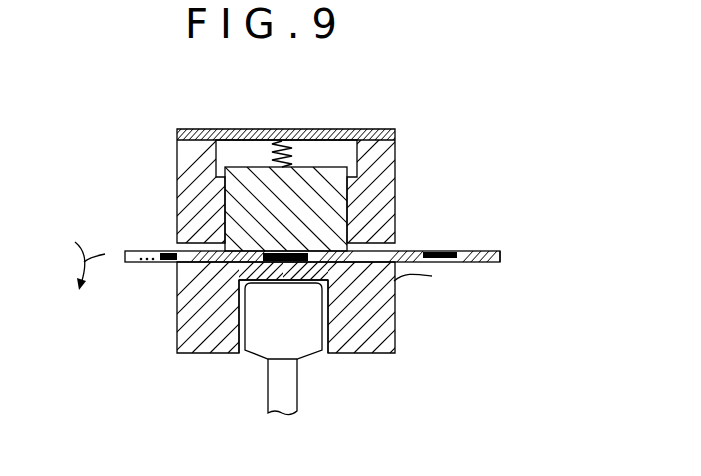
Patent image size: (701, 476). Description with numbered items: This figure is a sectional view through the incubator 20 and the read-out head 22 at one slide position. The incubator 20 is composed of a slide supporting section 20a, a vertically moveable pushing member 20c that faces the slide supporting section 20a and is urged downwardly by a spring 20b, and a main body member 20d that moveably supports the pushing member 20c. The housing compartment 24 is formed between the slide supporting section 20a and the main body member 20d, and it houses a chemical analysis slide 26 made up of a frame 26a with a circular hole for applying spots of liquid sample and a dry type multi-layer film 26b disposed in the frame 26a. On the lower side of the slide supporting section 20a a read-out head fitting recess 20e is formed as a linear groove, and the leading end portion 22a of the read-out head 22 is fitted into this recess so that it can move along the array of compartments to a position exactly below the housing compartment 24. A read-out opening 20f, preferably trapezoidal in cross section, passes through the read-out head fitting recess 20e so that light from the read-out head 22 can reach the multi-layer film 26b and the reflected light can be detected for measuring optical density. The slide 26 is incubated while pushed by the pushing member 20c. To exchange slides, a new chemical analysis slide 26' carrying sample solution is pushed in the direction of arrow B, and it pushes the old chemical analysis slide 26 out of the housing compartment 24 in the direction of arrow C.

The incubator 20 is at (416, 141).
The slide supporting section 20a is at (178, 290).
The spring 20b is at (300, 137).
The pushing member 20c is at (320, 187).
The main body member 20d is at (396, 182).
The read-out head fitting recess 20e is at (318, 355).
The read-out opening 20f is at (332, 277).
The read-out head 22 is at (304, 405).
The leading end portion 22a is at (272, 312).
The housing compartment 24 is at (396, 228).
The chemical analysis slide 26 is at (352, 293).
The new chemical analysis slide 26' is at (487, 291).
The frame 26a is at (233, 258).
The dry type multi-layer film 26b is at (246, 266).
The arrow B is at (425, 289).
The arrow C is at (77, 257).